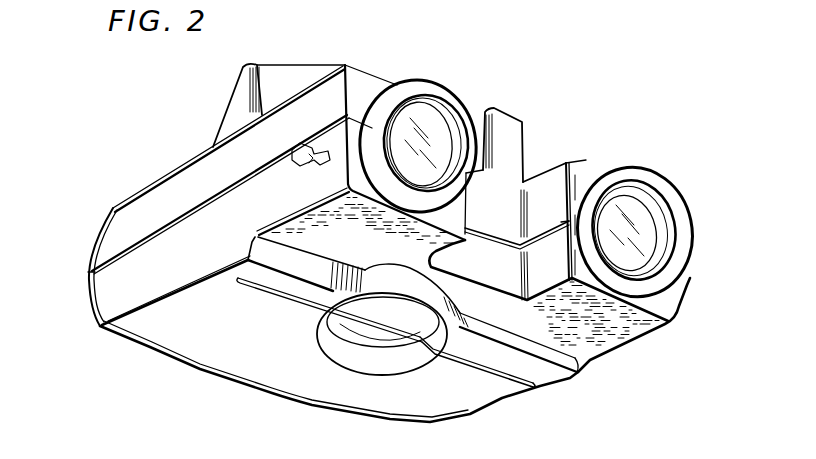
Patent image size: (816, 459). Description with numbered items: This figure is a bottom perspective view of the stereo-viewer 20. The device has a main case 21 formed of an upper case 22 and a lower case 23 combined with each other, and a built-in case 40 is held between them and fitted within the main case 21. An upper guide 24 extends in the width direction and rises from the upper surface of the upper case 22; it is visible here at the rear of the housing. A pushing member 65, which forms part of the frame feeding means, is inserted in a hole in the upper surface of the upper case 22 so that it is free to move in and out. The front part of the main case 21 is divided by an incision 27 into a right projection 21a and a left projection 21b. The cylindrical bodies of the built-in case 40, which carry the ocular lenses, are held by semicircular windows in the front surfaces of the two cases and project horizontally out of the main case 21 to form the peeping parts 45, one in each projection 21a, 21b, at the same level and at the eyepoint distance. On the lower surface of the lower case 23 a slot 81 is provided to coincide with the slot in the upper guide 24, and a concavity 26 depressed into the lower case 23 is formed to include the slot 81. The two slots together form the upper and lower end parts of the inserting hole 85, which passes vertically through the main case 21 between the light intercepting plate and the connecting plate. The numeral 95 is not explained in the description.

The stereo-viewer 20 is at (305, 407).
The main case 21 is at (115, 222).
The right projection 21a is at (673, 302).
The left projection 21b is at (363, 82).
The upper case 22 is at (133, 202).
The lower case 23 is at (110, 302).
The upper guide 24 is at (238, 102).
The concavity 26 is at (370, 343).
The incision 27 is at (525, 271).
The built-in case 40 is at (627, 177).
The peeping parts 45 is at (432, 83).
The pushing member 65 is at (520, 128).
The slot 81 is at (478, 372).
The inserting hole 85 is at (288, 300).
The plate front edge 95 is at (122, 332).